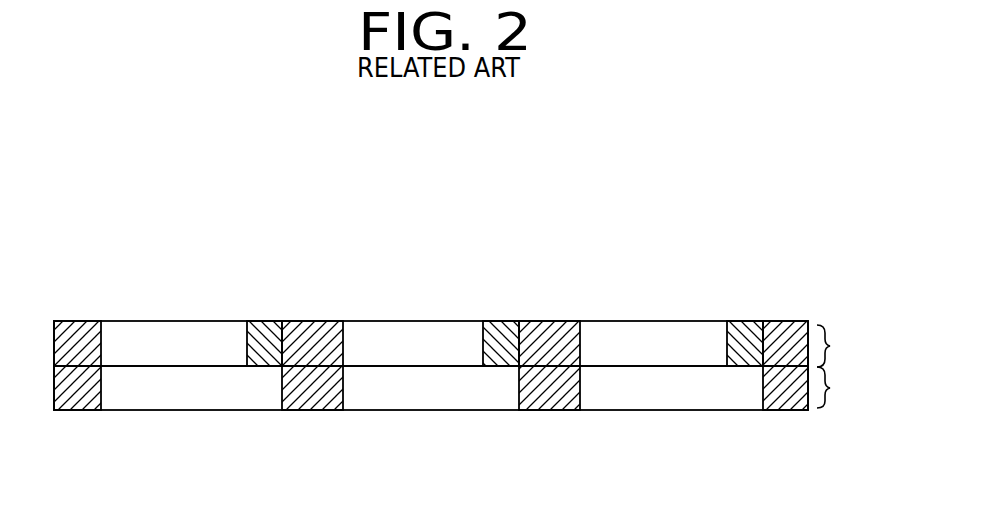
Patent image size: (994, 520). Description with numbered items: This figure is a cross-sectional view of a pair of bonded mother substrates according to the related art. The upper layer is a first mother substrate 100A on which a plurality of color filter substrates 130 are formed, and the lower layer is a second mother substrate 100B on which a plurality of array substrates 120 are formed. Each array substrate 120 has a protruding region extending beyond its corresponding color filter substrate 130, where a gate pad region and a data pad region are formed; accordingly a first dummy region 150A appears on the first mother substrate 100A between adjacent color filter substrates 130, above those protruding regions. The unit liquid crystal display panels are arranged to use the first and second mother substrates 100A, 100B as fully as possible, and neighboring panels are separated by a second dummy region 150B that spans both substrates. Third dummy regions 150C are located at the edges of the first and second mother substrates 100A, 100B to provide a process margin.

The first mother substrate 100A is at (846, 346).
The second mother substrate 100B is at (846, 387).
The array substrate 120 is at (185, 402).
The color filter substrate 130 is at (185, 328).
The first dummy region 150A is at (265, 320).
The second dummy region 150B is at (323, 326).
The third dummy region 150C is at (79, 320).